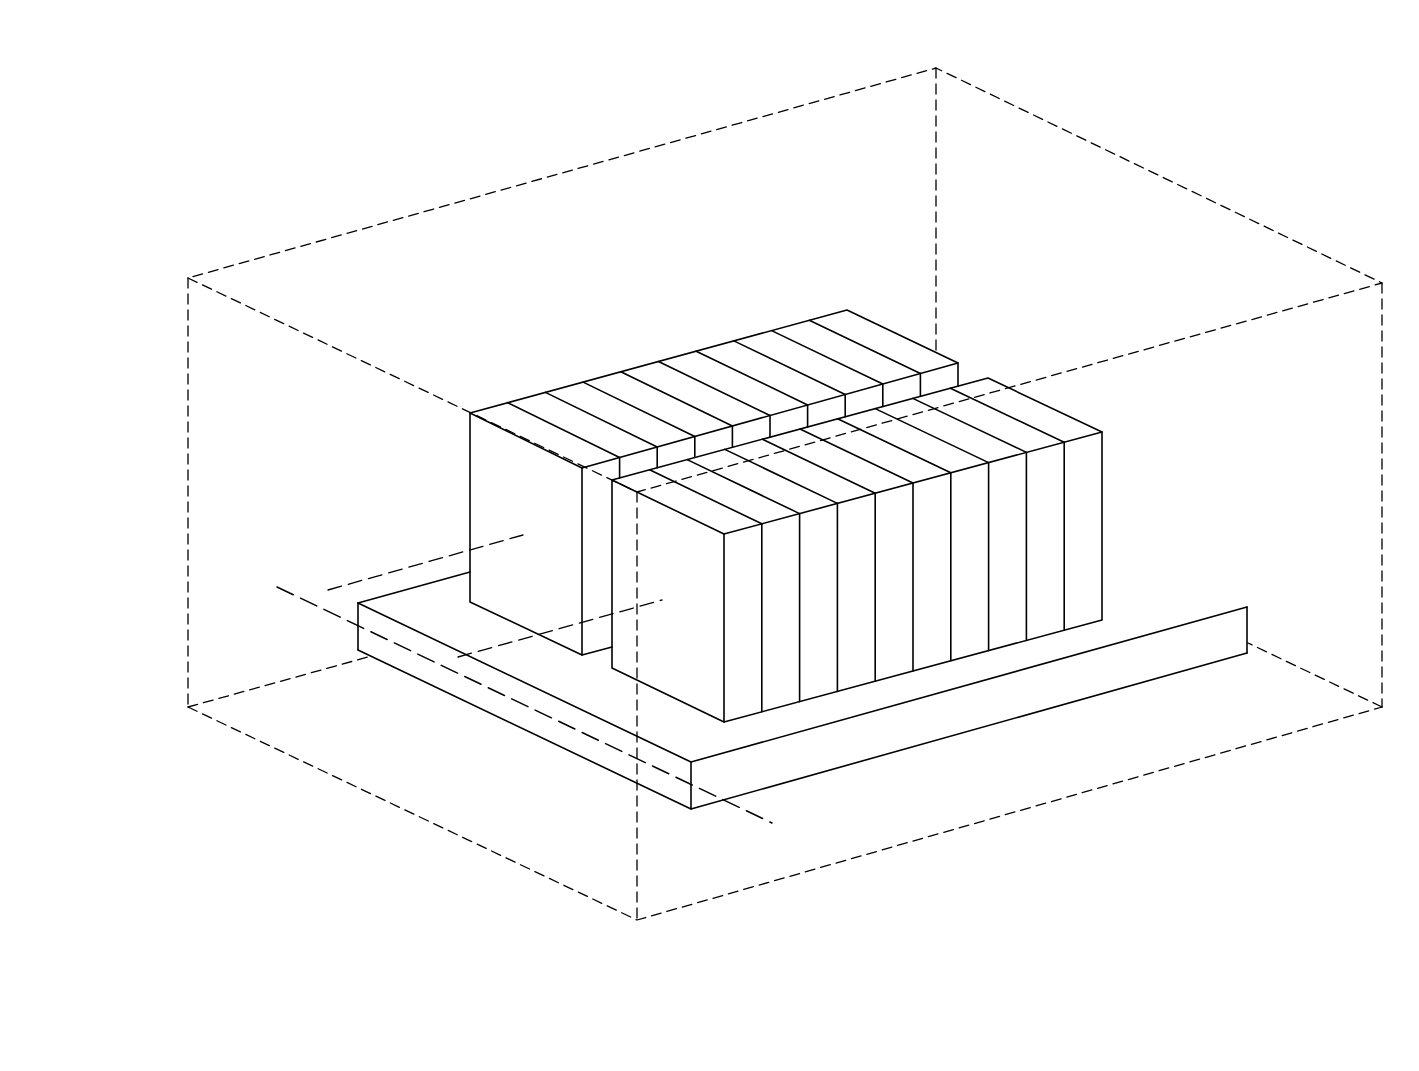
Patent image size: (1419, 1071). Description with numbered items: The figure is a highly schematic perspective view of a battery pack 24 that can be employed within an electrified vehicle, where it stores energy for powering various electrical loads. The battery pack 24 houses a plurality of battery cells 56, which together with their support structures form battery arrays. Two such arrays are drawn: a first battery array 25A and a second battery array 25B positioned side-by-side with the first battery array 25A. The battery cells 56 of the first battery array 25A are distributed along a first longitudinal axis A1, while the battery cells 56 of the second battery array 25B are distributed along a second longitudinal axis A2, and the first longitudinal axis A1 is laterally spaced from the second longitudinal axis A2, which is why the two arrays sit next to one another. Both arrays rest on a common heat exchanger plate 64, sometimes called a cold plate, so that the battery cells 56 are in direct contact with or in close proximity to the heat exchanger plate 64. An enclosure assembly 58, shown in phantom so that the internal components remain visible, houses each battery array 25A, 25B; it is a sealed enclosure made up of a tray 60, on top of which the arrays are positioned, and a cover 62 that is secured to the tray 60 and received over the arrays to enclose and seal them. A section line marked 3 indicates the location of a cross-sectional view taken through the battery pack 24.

The battery pack 24 is at (1274, 118).
The enclosure assembly 58 is at (378, 221).
The cover 62 is at (188, 364).
The tray 60 is at (843, 864).
The heat exchanger plate 64 is at (975, 707).
The first battery array 25A is at (794, 320).
The second battery array 25B is at (1079, 412).
The battery cells 56 is at (652, 380).
The first longitudinal axis A1 is at (473, 550).
The second longitudinal axis A2 is at (508, 648).
The section line 3- 3 is at (277, 587).